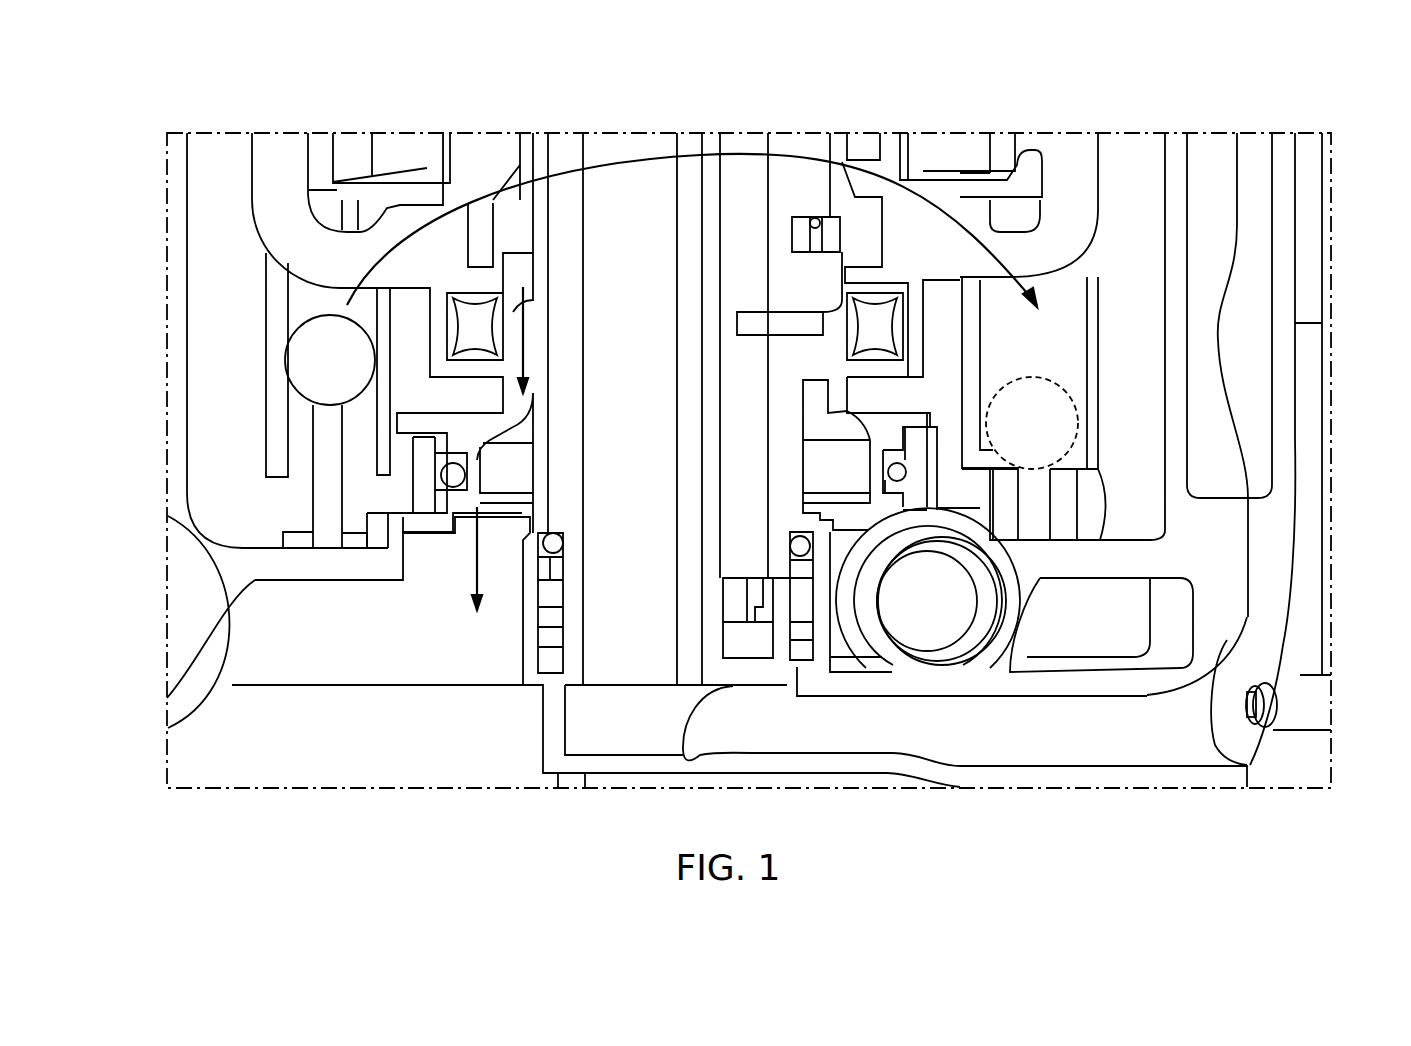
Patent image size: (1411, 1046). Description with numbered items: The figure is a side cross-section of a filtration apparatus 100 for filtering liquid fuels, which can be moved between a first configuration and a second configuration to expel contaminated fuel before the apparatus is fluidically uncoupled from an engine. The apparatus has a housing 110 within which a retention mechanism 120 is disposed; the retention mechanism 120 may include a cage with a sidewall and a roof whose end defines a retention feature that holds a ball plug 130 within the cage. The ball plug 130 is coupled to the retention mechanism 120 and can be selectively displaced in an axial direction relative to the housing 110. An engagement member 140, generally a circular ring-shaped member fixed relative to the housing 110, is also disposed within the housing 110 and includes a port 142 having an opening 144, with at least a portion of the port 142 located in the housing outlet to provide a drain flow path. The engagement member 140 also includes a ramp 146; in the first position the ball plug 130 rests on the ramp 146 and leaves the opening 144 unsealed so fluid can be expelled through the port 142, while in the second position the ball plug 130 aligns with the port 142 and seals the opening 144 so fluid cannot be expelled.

The filtration apparatus 100 is at (482, 104).
The housing 110 is at (1253, 375).
The retention mechanism 120 is at (247, 337).
The ball plug 130 is at (318, 375).
The engagement member 140 is at (1090, 513).
The port 142 is at (1068, 497).
The opening 144 is at (1038, 488).
The ramp 146 is at (325, 517).